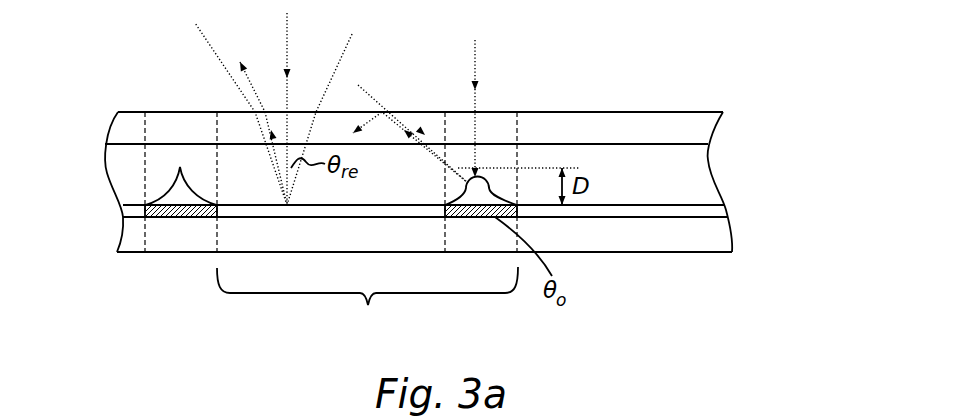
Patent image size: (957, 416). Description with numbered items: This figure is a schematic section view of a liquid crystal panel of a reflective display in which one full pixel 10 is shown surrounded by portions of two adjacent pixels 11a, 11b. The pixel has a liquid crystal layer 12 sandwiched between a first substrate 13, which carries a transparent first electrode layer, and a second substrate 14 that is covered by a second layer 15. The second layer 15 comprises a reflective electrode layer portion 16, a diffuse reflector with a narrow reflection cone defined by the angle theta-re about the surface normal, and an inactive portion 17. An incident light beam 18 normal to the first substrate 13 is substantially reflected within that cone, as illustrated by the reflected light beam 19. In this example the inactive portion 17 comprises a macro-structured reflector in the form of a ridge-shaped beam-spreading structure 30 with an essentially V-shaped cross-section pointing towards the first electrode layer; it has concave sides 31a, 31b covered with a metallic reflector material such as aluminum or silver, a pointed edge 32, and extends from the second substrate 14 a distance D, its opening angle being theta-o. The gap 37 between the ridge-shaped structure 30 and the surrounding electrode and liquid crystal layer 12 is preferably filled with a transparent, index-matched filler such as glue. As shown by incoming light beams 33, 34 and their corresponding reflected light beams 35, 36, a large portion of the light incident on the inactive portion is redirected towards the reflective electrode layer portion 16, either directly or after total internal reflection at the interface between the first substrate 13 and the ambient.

The pixel 10 is at (367, 304).
The adjacent pixel 11a is at (135, 270).
The adjacent pixel 11b is at (613, 262).
The liquid crystal layer 12 is at (227, 168).
The first substrate 13 is at (233, 132).
The second substrate 14 is at (238, 233).
The second layer 15 is at (727, 208).
The reflective electrode layer portion 16 is at (255, 208).
The inactive portion 17 is at (458, 217).
The incident light beam 18 is at (288, 43).
The reflected light beam 19 is at (233, 55).
The ridge-shaped beam-spreading structure 30 is at (498, 178).
The concave side 31a is at (458, 192).
The concave side 31b is at (490, 188).
The pointed edge 32 is at (476, 178).
The incoming light beam 33 is at (477, 58).
The incoming light beam 34 is at (390, 98).
The reflected light beam 35 is at (442, 203).
The reflected light beam 36 is at (370, 127).
The gap 37 is at (457, 152).